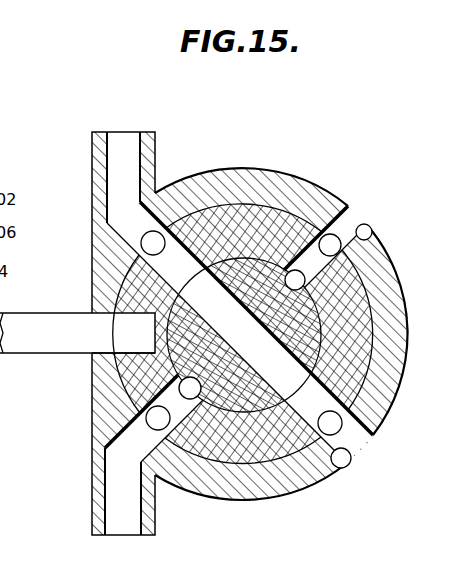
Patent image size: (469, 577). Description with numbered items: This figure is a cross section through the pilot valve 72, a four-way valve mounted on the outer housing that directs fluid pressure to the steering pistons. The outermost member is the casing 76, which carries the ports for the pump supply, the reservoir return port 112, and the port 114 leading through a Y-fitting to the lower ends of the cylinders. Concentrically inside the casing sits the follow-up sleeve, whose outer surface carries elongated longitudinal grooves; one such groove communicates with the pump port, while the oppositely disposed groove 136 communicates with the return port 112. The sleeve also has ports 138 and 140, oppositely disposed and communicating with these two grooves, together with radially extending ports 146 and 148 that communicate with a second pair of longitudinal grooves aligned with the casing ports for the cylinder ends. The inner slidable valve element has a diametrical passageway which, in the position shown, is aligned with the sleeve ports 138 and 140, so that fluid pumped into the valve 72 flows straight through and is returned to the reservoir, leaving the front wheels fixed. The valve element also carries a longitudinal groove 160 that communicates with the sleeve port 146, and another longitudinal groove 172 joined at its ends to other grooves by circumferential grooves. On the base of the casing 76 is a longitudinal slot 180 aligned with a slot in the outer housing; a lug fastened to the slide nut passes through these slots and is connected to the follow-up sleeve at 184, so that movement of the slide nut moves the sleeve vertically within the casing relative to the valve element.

The pilot valve 72 is at (241, 150).
The outer casing 76 is at (204, 333).
The port 112 is at (348, 458).
The port 114 is at (362, 232).
The elongated groove 136 is at (341, 427).
The port 138 is at (167, 252).
The port 140 is at (296, 430).
The radially extending port 146 is at (330, 276).
The radially extending port 148 is at (178, 421).
The longitudinally extending groove 160 is at (320, 290).
The longitudinally extending groove 172 is at (165, 384).
The longitudinally extending slot 180 is at (97, 318).
The lug connection 184 is at (125, 360).